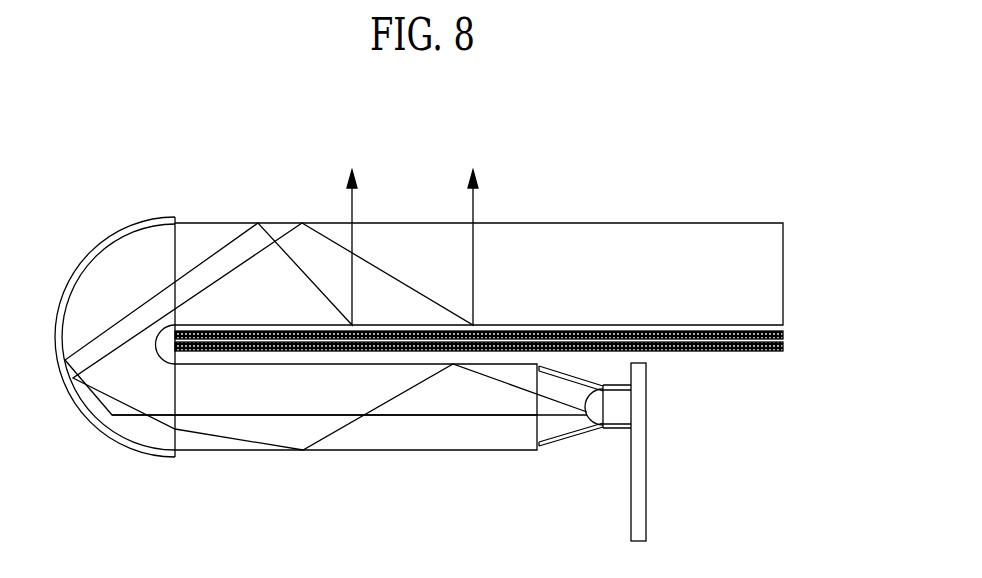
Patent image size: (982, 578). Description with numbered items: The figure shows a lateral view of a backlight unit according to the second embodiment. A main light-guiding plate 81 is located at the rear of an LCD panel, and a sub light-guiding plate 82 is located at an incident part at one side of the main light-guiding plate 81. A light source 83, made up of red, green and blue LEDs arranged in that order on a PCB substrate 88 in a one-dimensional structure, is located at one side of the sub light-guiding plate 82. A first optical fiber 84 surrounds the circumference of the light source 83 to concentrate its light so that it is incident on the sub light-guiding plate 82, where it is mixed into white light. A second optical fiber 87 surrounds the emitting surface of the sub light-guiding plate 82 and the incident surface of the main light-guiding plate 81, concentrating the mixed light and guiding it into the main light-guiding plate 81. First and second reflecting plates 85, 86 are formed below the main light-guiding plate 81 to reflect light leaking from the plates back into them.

The main light-guiding plate 81 is at (722, 237).
The sub light-guiding plate 82 is at (458, 437).
The light source 83 is at (596, 420).
The first optical fiber 84 is at (558, 446).
The first reflecting plate 85 is at (785, 334).
The second reflecting plate 86 is at (777, 351).
The second optical fiber 87 is at (112, 236).
The PCB substrate 88 is at (646, 520).